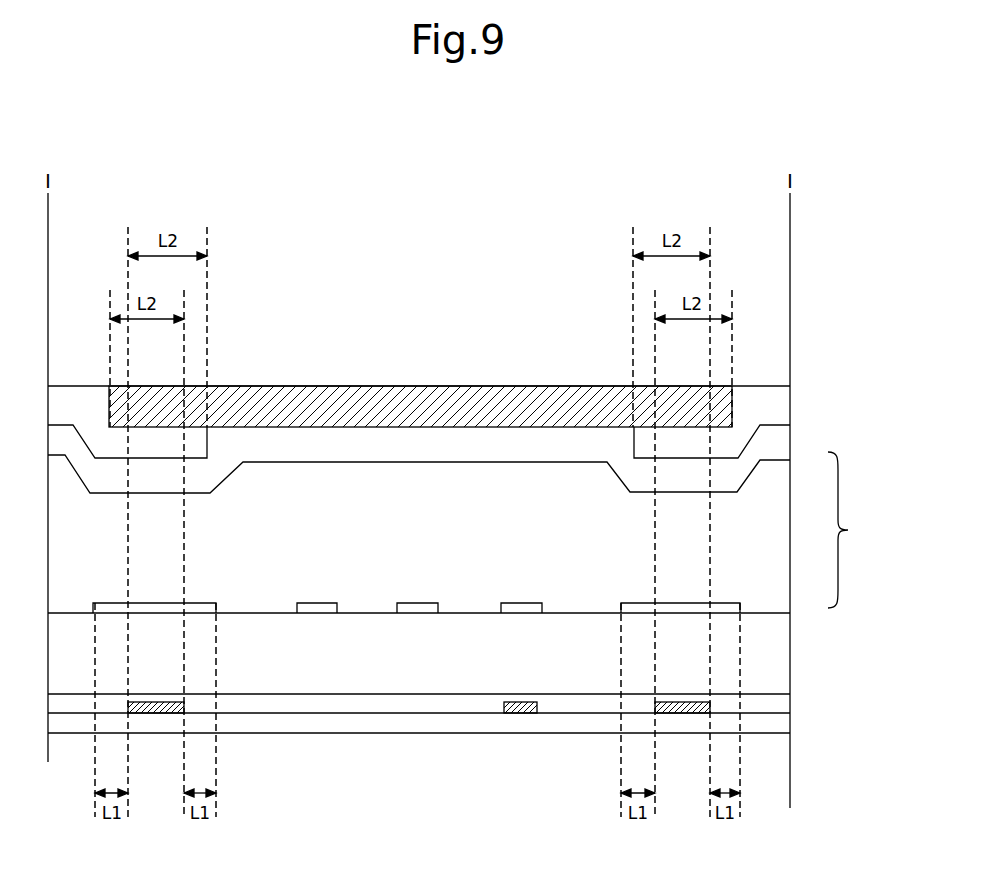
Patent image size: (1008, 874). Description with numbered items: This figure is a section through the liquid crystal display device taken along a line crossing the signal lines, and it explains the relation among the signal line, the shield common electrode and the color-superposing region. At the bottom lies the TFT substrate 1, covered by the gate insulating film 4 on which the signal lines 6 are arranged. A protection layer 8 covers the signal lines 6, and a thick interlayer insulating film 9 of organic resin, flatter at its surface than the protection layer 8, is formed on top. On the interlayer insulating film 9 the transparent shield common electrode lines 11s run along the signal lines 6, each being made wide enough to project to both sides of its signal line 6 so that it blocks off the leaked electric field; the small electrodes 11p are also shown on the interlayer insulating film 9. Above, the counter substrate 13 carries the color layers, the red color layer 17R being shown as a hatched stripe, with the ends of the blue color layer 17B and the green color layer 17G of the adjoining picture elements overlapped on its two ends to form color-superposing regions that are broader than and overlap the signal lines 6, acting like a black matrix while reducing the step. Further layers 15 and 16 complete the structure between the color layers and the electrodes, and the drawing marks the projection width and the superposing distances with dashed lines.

The TFT substrate 1 is at (755, 740).
The gate insulating film 4 is at (762, 727).
The signal line 6 is at (160, 705).
The protection layer 8 is at (762, 700).
The interlayer insulating film 9 is at (762, 660).
The shield common electrode line 11s is at (100, 603).
The pixel electrode connection 11p is at (315, 603).
The counter substrate 13 is at (778, 388).
The pixel electrode 15 is at (767, 442).
The organic light emitting layer 16 is at (855, 530).
The red color layer 17R is at (435, 400).
The green color layer 17G is at (767, 410).
The blue color layer 17B is at (73, 402).